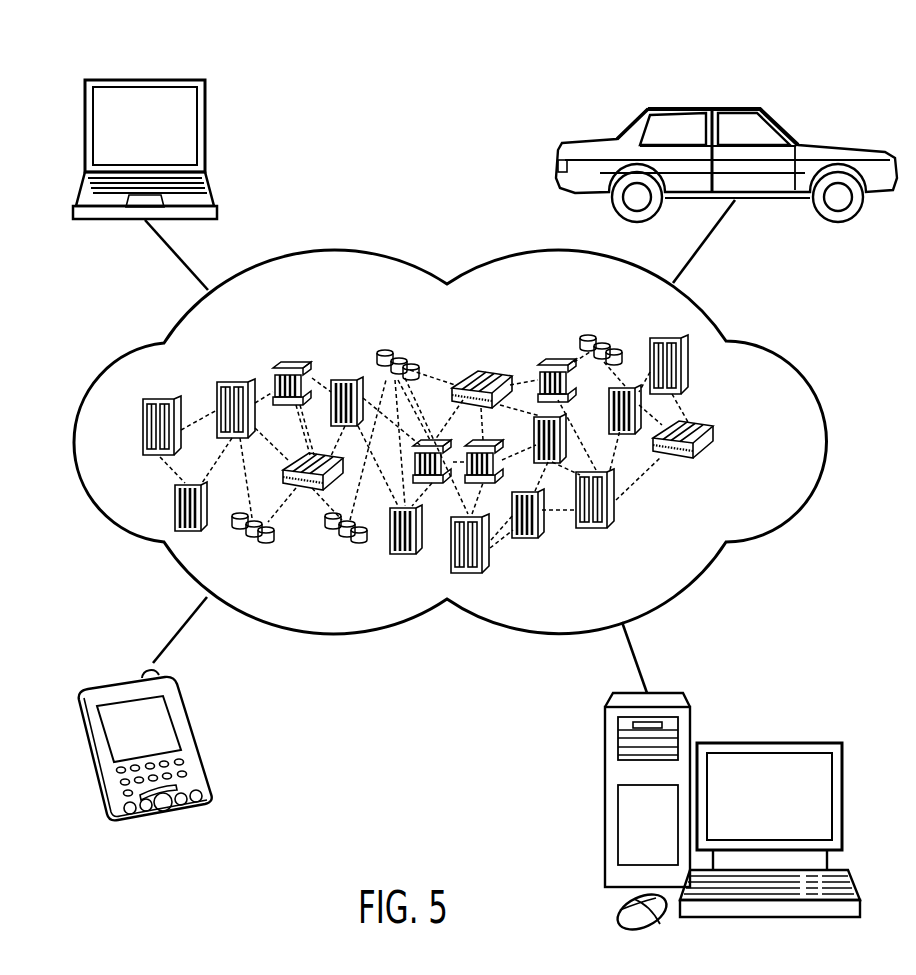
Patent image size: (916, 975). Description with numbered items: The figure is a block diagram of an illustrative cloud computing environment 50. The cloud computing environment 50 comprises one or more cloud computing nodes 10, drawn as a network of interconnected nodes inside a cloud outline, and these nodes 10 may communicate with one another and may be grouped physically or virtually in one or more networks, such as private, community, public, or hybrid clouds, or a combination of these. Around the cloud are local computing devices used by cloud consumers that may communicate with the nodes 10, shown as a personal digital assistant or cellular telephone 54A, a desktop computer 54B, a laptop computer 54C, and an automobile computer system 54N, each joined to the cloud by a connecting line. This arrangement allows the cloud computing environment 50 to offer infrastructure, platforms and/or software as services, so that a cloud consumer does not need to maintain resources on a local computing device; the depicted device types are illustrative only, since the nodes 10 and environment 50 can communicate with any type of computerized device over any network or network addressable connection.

The cloud computing node 10 is at (718, 442).
The cloud computing environment 50 is at (783, 346).
The personal digital assistant (PDA) or cellular telephone 54A is at (123, 678).
The desktop computer 54B is at (770, 743).
The laptop computer 54C is at (145, 80).
The automobile computer system 54N is at (702, 108).